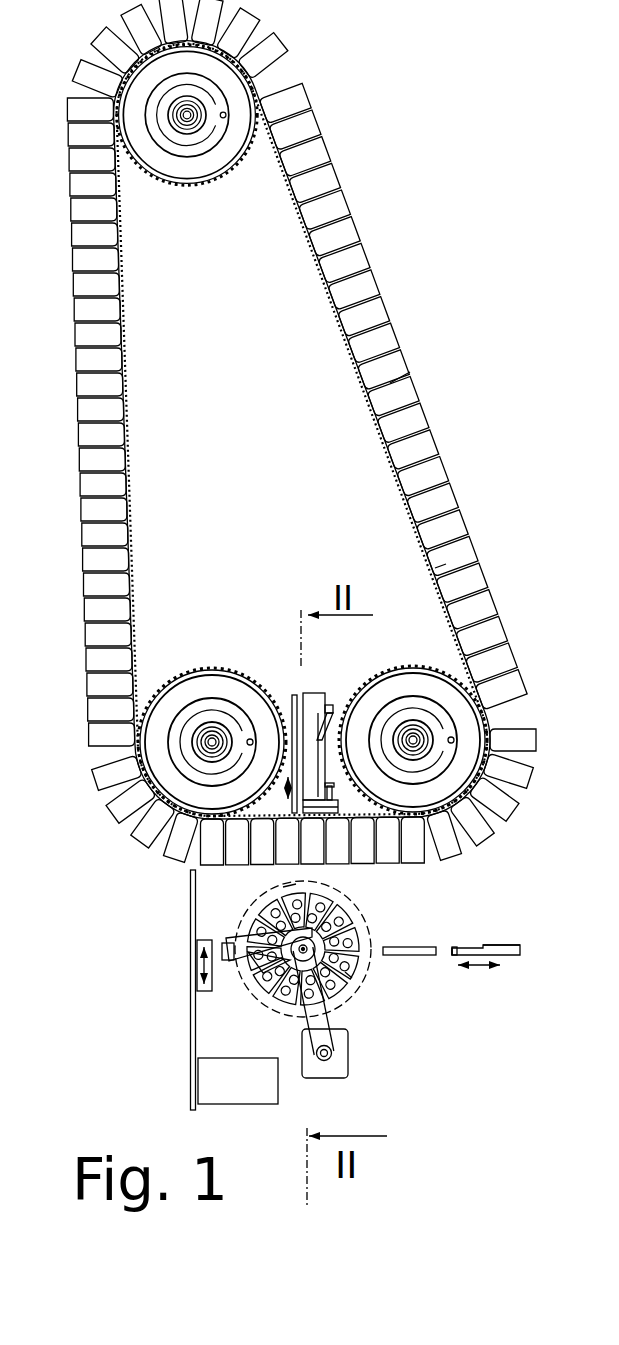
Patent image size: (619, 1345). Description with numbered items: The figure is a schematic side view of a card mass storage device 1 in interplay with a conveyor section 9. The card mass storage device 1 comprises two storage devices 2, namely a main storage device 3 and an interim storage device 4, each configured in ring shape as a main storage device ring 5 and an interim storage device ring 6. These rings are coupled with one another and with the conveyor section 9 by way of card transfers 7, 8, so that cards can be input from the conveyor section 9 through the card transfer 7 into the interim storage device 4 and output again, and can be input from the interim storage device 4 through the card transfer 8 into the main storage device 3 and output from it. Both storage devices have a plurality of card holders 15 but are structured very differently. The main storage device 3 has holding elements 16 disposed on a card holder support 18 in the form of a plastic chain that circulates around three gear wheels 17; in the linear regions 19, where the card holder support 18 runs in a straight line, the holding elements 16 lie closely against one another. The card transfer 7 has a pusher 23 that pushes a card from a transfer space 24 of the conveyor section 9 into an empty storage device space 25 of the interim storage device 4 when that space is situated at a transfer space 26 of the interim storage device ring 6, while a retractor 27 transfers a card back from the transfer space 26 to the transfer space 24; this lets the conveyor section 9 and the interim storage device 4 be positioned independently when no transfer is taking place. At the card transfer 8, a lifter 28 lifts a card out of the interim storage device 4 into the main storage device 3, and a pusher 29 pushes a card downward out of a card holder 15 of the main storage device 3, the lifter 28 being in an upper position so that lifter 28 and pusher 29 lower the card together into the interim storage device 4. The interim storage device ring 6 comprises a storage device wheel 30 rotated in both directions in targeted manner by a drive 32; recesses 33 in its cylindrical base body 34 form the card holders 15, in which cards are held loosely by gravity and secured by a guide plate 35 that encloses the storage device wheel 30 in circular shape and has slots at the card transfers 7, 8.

The card mass storage device 1 is at (457, 103).
The storage devices 2 is at (455, 178).
The main storage device 3 is at (450, 234).
The interim storage device 4 is at (452, 1046).
The main storage device ring 5 is at (410, 372).
The interim storage device ring 6 is at (283, 908).
The card transfer 7 is at (489, 940).
The card transfer 8 is at (160, 958).
The conveyor section 9 is at (410, 957).
The card holders 15 is at (275, 970).
The holding elements 16 is at (413, 452).
The gear wheels 17 is at (232, 85).
The card holder support 18 is at (435, 568).
The linear regions 19 is at (122, 328).
The pusher 23 is at (497, 948).
The transfer space 24 is at (412, 977).
The storage device space 25 is at (345, 972).
The transfer space 26 is at (360, 970).
The retractor 27 is at (453, 948).
The lifter 28 is at (260, 957).
The pusher 29 is at (297, 692).
The storage device wheel 30 is at (290, 985).
The drive 32 is at (323, 1068).
The recesses 33 is at (283, 887).
The cylindrical base body 34 is at (300, 880).
The guide plate 35 is at (292, 1015).